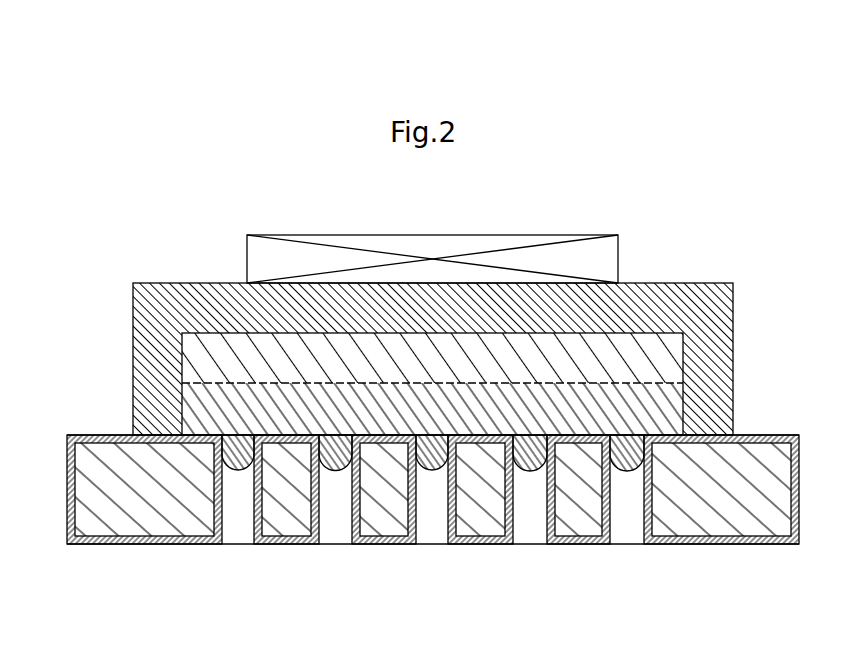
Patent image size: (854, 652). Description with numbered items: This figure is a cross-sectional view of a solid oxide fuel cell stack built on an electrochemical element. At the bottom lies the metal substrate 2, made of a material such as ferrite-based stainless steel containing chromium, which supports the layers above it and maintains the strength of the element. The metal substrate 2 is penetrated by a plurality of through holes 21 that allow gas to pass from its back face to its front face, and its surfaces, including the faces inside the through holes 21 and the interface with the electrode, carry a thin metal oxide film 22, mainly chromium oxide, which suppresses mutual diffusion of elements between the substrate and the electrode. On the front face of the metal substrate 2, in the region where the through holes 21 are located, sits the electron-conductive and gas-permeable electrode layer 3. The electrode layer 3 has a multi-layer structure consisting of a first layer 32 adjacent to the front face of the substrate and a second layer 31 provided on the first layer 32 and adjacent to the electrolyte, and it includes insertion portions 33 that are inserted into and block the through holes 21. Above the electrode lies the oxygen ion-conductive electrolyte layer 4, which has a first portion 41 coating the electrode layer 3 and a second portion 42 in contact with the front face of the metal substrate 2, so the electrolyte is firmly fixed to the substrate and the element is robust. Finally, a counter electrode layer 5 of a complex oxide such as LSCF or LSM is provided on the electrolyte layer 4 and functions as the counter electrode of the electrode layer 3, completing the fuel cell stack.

The metal substrate 2 is at (414, 521).
The through holes 21 is at (227, 526).
The metal oxide film 22 is at (117, 546).
The electrode layer 3 is at (361, 323).
The second layer 31 is at (204, 358).
The first layer 32 is at (165, 408).
The insertion portions 33 is at (338, 462).
The electrolyte layer 4 is at (465, 323).
The first portion 41 is at (661, 292).
The second portion 42 is at (722, 381).
The counter electrode layer 5 is at (474, 236).